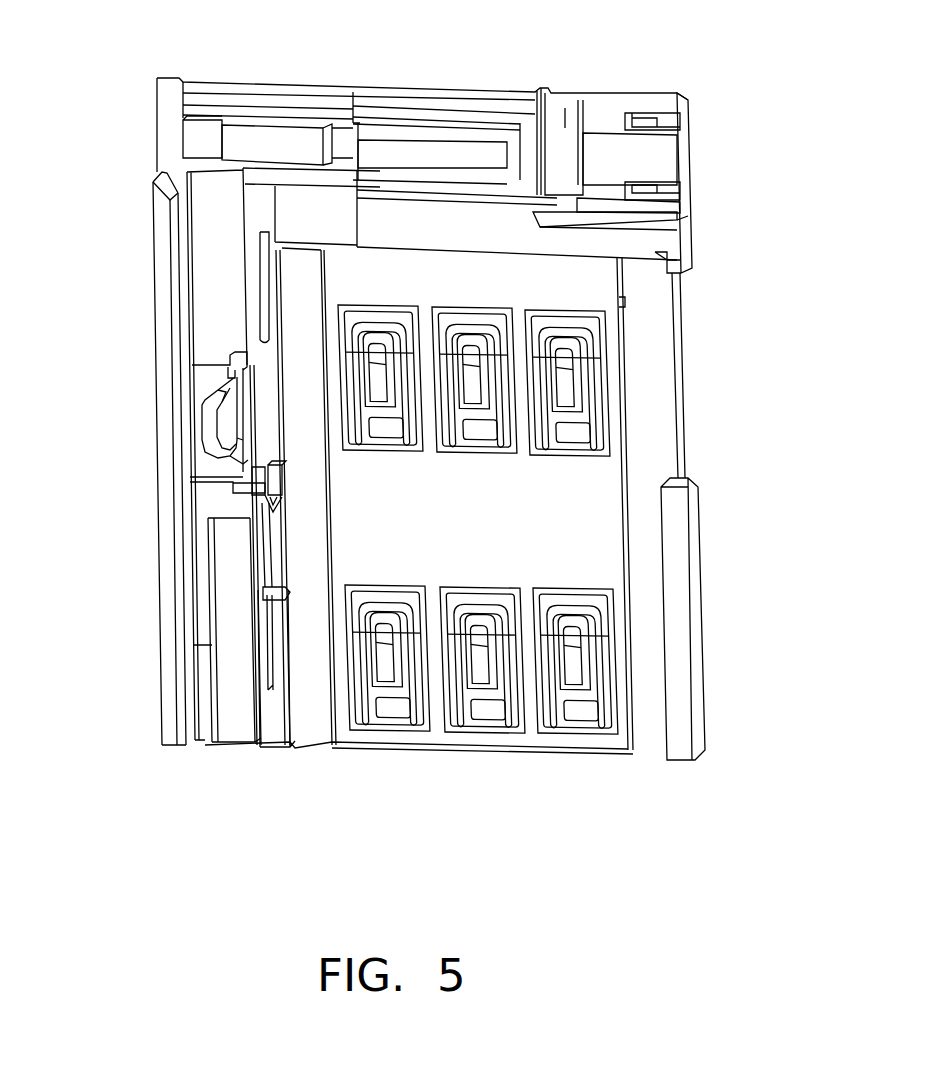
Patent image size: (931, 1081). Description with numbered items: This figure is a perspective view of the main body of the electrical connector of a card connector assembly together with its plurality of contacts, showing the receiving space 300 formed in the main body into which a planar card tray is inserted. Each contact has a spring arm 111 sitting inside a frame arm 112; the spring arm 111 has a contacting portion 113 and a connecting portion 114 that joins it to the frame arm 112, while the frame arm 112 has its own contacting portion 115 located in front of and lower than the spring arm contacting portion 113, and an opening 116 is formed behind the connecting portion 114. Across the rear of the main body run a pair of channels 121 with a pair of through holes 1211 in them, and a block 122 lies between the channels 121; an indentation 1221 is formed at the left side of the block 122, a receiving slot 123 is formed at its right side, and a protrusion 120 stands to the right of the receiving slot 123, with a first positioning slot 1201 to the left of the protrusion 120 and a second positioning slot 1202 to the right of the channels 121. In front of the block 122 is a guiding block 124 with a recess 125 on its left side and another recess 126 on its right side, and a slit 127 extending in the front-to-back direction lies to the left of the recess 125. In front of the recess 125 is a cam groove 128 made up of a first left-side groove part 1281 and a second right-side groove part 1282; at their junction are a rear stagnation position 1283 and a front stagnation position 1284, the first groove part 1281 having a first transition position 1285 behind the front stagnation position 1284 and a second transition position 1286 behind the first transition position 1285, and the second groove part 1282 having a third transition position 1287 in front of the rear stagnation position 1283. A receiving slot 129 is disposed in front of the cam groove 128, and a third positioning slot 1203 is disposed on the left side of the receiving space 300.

The spring arm 111 is at (563, 378).
The frame arm 112 is at (585, 396).
The contacting portion 113 is at (565, 641).
The connecting portion 114 is at (575, 693).
The contacting portion 115 is at (593, 615).
The opening 116 is at (567, 434).
The protrusion 120 is at (618, 157).
The channels 121 is at (500, 190).
The block 122 is at (258, 140).
The receiving slot 123 is at (413, 153).
The guiding block 124 is at (252, 243).
The recess 125 is at (208, 202).
The recess 126 is at (312, 205).
The slit 127 is at (185, 296).
The cam groove 128 is at (212, 413).
The receiving slot 129 is at (233, 665).
The receiving space 300 is at (527, 532).
The first positioning slot 1201 is at (565, 150).
The second positioning slot 1202 is at (662, 221).
The third positioning slot 1203 is at (280, 595).
The through holes 1211 is at (650, 188).
The indentation 1221 is at (198, 146).
The first groove part 1281 is at (237, 414).
The second groove part 1282 is at (218, 443).
The rear stagnation position 1283 is at (232, 347).
The front stagnation position 1284 is at (215, 478).
The first transition position 1285 is at (220, 462).
The second transition position 1286 is at (222, 383).
The third transition position 1287 is at (222, 462).